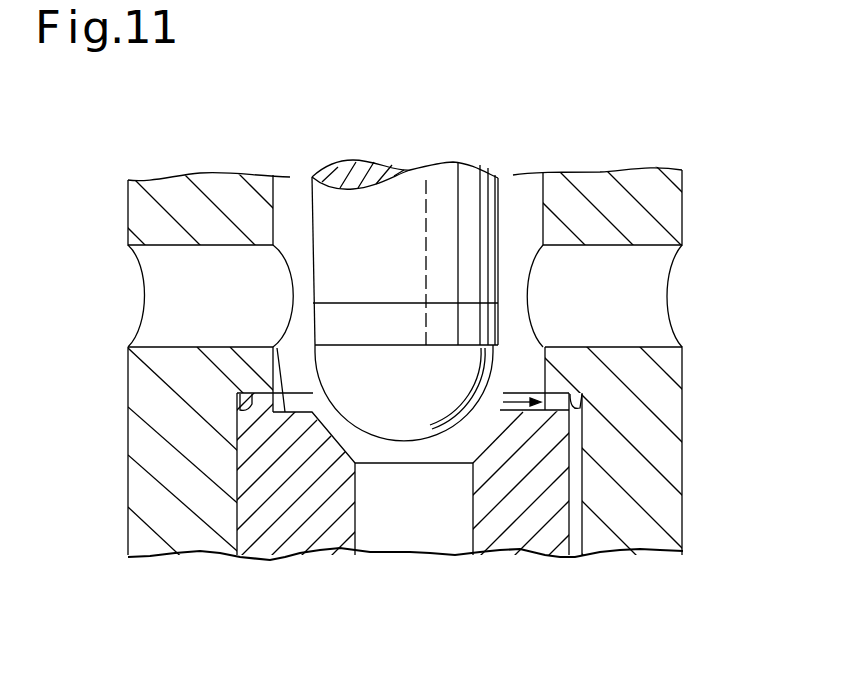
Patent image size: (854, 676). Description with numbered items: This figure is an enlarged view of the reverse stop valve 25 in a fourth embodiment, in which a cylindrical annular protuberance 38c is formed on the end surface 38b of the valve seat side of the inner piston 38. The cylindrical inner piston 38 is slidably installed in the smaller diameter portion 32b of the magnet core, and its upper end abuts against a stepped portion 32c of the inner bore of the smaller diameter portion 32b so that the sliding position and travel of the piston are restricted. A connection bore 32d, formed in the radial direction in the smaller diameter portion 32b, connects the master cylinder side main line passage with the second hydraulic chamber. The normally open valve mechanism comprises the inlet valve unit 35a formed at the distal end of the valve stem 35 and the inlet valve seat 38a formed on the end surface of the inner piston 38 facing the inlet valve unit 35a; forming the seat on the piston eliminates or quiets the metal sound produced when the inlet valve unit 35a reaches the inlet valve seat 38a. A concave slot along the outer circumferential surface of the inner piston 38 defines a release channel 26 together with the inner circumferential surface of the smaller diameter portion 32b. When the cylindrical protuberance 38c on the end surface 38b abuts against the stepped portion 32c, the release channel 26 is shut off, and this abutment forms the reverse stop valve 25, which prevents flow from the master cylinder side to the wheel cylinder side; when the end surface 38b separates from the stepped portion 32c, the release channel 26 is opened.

The valve stem 35 is at (420, 185).
The inlet valve unit 35a is at (407, 425).
The inner piston 38 is at (262, 556).
The inlet valve seat 38a is at (345, 455).
The end surface of the valve seat side of the inner piston 38b is at (277, 347).
The cylindrical annular protuberance 38c is at (240, 398).
The smaller diameter portion 32b is at (630, 556).
The stepped portion 32c is at (582, 400).
The connection bore 32d is at (655, 309).
The release channel 26 is at (582, 496).
The reverse stop valve 25 is at (500, 402).